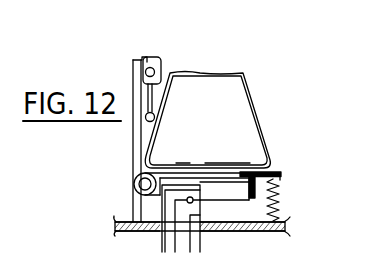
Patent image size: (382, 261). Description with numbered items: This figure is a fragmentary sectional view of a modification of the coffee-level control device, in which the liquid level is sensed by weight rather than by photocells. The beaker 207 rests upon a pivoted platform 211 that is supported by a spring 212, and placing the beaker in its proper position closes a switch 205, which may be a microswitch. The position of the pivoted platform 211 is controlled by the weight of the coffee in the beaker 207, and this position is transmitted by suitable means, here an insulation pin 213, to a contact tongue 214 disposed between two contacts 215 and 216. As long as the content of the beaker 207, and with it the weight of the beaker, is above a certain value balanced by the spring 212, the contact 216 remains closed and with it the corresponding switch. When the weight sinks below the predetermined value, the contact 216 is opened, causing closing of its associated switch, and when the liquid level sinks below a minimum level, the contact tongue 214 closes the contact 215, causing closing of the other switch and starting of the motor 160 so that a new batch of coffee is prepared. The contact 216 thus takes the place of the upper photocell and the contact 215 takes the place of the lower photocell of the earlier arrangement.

The motor 160 is at (243, 159).
The switch 205 is at (157, 66).
The beaker 207 is at (245, 123).
The pivoted platform 211 is at (267, 173).
The spring 212 is at (273, 205).
The insulation pin 213 is at (256, 187).
The contact tongue 214 is at (246, 198).
The contact 215 is at (230, 191).
The contact 216 is at (230, 204).